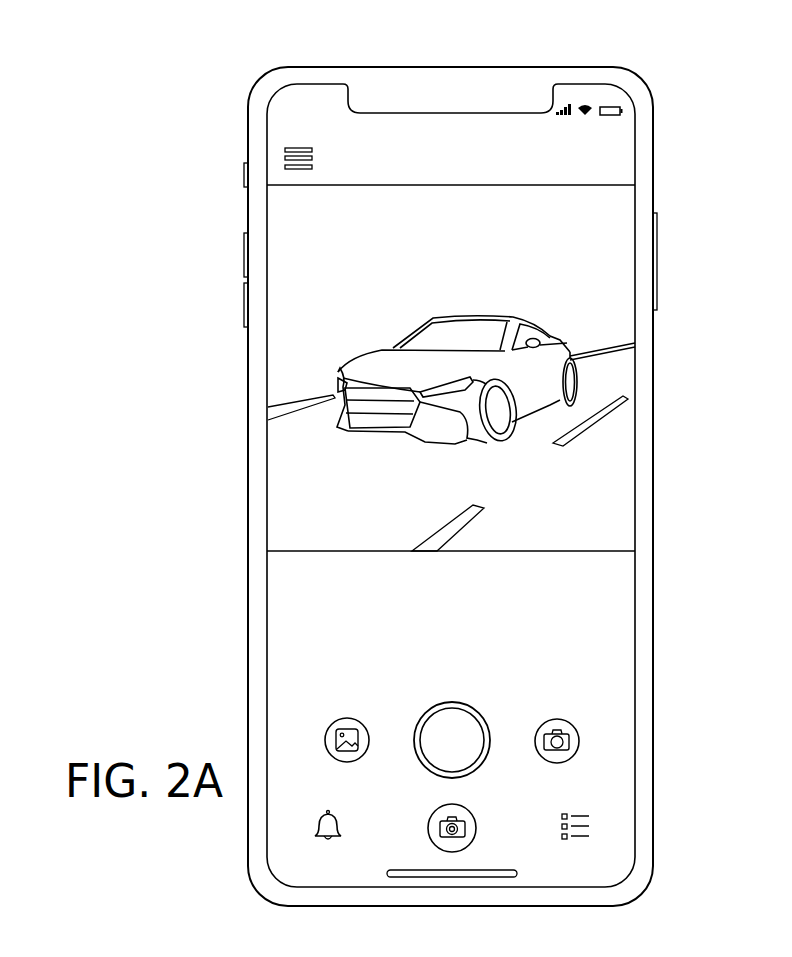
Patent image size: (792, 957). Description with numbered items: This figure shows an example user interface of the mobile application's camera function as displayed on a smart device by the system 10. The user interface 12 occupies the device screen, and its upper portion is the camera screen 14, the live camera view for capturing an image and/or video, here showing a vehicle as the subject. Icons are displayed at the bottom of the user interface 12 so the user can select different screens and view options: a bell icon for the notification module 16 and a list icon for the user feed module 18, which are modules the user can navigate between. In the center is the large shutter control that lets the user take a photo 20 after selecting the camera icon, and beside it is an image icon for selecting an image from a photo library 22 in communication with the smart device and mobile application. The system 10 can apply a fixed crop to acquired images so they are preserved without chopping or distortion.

The system 10 is at (176, 122).
The user interface 12 is at (275, 68).
The camera screen 14 is at (447, 389).
The notification module 16 is at (318, 828).
The user feed module 18 is at (592, 828).
The photo 20 is at (473, 707).
The photo library 22 is at (327, 721).